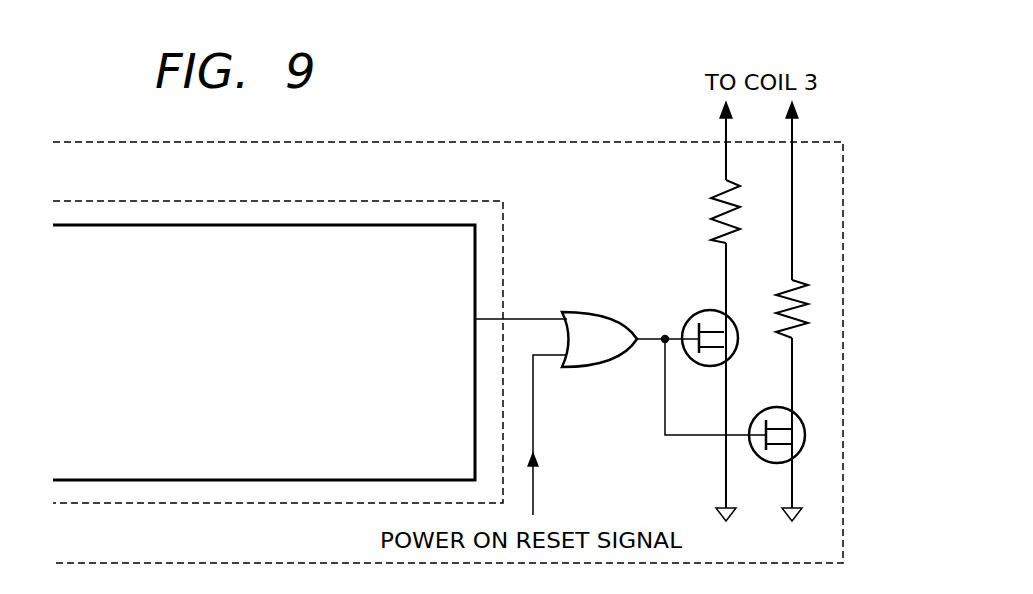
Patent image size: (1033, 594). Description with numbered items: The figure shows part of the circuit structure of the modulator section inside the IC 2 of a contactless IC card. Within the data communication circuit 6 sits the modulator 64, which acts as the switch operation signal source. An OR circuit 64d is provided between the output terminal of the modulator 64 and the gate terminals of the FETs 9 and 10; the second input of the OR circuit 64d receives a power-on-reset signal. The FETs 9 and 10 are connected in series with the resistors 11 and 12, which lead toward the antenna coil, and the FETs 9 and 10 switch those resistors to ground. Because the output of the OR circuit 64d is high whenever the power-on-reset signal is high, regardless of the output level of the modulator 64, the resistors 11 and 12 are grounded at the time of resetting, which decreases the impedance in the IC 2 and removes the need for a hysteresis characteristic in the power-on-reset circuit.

The IC IC2 is at (597, 143).
The data communication circuit 6 is at (436, 200).
The modulator 64 is at (350, 224).
The OR circuit 64d is at (600, 312).
The FET 9 is at (694, 313).
The FET 10 is at (760, 410).
The resistor 11 is at (737, 182).
The resistor 12 is at (797, 280).